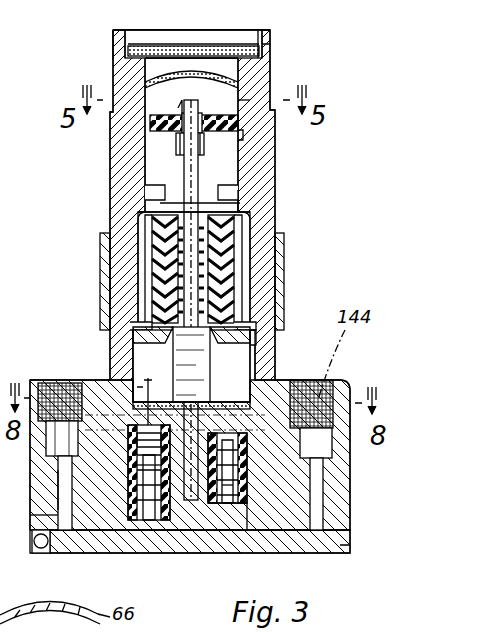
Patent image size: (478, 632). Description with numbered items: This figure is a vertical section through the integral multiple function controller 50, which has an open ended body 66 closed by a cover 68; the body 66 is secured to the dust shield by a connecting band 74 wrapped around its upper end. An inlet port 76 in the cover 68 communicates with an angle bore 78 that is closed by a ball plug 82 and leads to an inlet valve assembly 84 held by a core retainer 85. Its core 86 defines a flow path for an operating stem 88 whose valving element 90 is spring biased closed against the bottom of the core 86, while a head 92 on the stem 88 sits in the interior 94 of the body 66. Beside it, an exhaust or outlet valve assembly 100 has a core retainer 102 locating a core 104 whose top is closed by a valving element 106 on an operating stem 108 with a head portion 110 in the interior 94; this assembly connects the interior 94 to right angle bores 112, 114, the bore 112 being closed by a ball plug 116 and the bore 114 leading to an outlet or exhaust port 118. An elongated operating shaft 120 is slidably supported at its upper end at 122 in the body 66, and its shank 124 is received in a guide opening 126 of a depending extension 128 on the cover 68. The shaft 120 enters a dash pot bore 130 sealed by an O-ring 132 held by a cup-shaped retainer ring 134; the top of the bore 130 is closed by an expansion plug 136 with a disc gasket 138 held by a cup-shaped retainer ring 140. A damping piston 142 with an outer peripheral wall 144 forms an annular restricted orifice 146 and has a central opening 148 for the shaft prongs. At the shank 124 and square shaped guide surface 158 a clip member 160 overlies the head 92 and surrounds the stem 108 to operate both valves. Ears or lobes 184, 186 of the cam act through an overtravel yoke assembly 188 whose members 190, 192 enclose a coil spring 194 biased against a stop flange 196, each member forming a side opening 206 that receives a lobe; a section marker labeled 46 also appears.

The integral multiple function controller 50 is at (110, 45).
The cup-shaped retainer ring 140 is at (135, 52).
The expansion plug 136 is at (205, 62).
The disc gasket 138 is at (265, 62).
The dash pot bore 130 is at (240, 100).
The body 66 is at (118, 133).
The central opening 148 is at (183, 112).
The annular restricted orifice 146 is at (202, 114).
The outer peripheral wall 144 is at (142, 133).
The damping piston 142 is at (243, 135).
The cup-shaped retainer ring 134 is at (155, 190).
The operating shaft 120 is at (180, 203).
The yoke member 190 is at (150, 245).
The side opening 206 is at (148, 250).
The ear or lobe 184 is at (152, 292).
The stop flange 196 is at (140, 324).
The head portion 110 is at (148, 378).
The operating stem 108 is at (133, 393).
The shank 124 is at (175, 382).
The head 92 is at (246, 424).
The clip member 160 is at (132, 413).
The valving element 106 is at (137, 438).
The core 104 is at (135, 465).
The core retainer 102 is at (128, 480).
The exhaust or outlet valve assembly 100 is at (128, 505).
The cover 68 is at (45, 518).
The right angle bore 114 is at (58, 490).
The outlet or exhaust port 118 is at (48, 440).
The ball plug 116 is at (32, 556).
The right angle bore 112 is at (68, 540).
The depending extension 128 is at (160, 540).
The guide opening 126 is at (178, 535).
The inlet valve assembly 84 is at (212, 515).
The valving element 90 is at (246, 530).
The core 86 is at (240, 470).
The core retainer 85 is at (245, 500).
The angle bore 78 is at (335, 480).
The ball plug 82 is at (352, 528).
The operating stem 88 is at (248, 400).
The square shaped guide surface 158 is at (258, 372).
The interior 94 is at (256, 345).
The coil spring 194 is at (262, 318).
The connecting band 74 is at (280, 300).
The ear or lobe 186 is at (236, 268).
The yoke member 192 is at (250, 246).
The overtravel yoke assembly 188 is at (255, 235).
The O-ring 132 is at (240, 195).
The slidable support 122 is at (240, 170).
The inlet port 76 is at (335, 382).
The fitting 46 is at (48, 385).